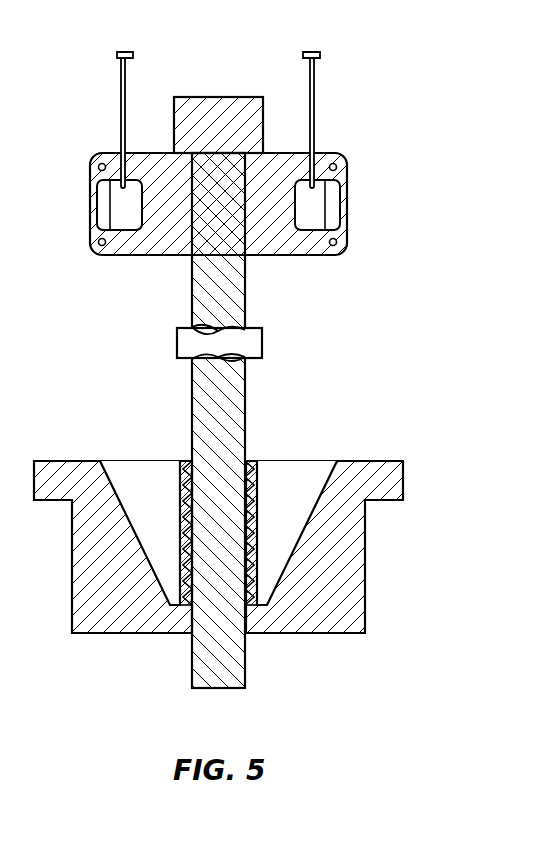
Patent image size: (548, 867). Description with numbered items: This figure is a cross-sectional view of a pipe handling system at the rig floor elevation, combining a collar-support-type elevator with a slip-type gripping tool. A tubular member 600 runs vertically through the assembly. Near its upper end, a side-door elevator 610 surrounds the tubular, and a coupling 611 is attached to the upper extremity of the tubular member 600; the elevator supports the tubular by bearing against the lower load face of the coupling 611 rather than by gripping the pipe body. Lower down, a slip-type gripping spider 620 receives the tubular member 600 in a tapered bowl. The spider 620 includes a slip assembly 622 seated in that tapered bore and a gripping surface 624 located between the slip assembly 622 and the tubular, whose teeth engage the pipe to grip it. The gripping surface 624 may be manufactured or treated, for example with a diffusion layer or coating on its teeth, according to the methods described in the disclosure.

The tubular member 600 is at (191, 402).
The side-door elevator 610 is at (327, 152).
The coupling 611 is at (264, 150).
The slip-type gripping spider 620 is at (365, 563).
The slip assembly 622 is at (298, 490).
The gripping surface 624 is at (260, 488).